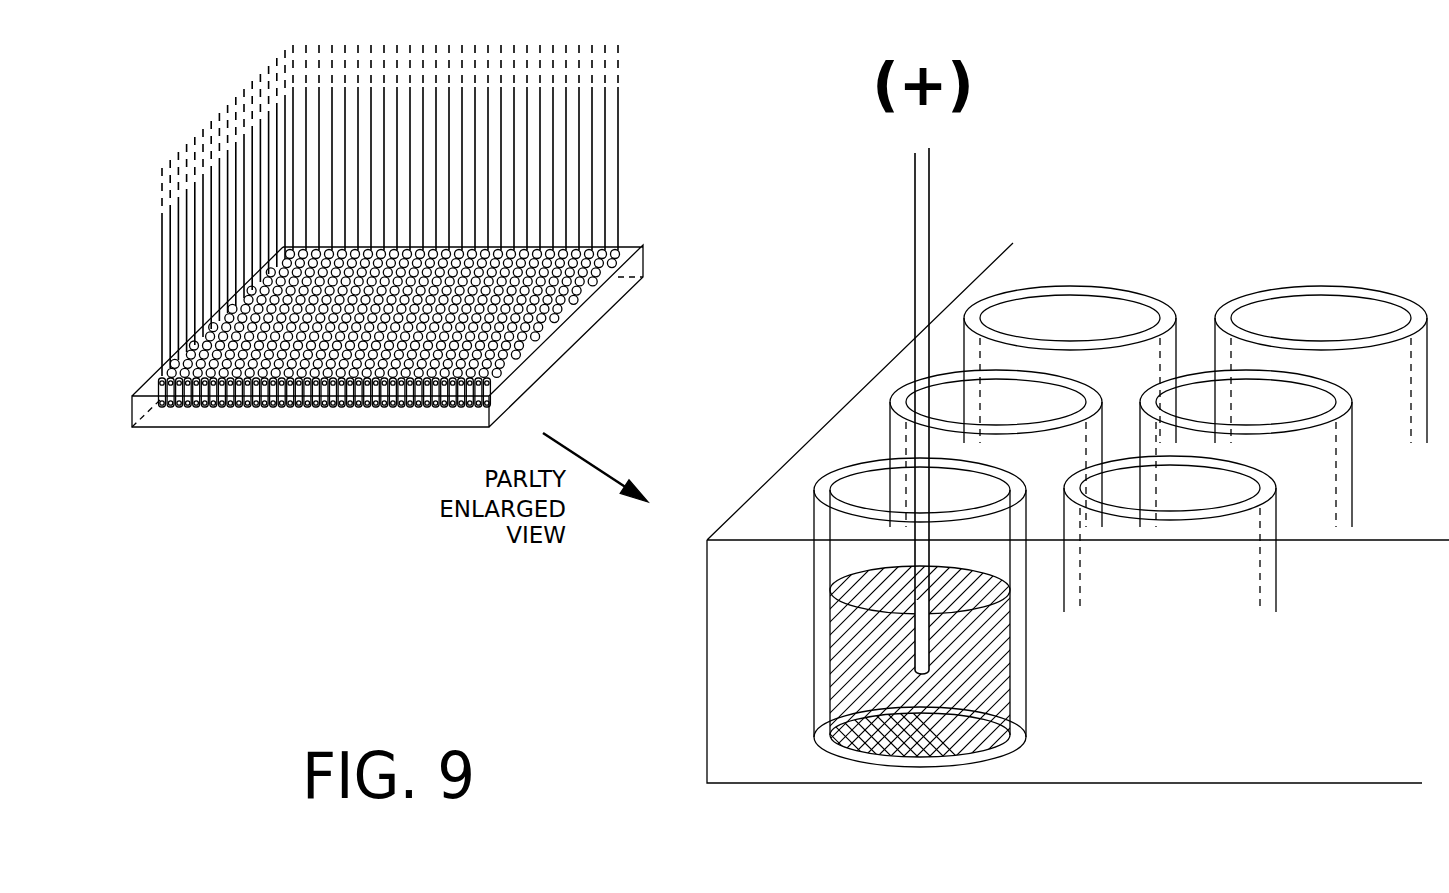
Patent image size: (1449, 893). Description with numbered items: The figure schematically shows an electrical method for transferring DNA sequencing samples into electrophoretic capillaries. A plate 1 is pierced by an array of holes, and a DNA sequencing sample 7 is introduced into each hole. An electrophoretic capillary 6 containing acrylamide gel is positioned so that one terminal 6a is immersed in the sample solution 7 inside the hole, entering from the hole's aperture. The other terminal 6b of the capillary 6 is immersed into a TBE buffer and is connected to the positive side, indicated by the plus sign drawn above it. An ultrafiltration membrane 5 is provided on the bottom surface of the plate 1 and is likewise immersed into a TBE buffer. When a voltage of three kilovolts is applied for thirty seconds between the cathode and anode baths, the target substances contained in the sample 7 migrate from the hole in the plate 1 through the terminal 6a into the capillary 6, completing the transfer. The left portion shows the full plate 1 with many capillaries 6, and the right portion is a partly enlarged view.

The plate 1 is at (324, 427).
The ultrafiltration membrane 5 is at (908, 743).
The electrophoretic capillary 6 is at (617, 114).
The terminal of the capillary 6a is at (922, 640).
The other terminal of the capillary 6b is at (920, 167).
The DNA sequencing sample 7 is at (992, 692).